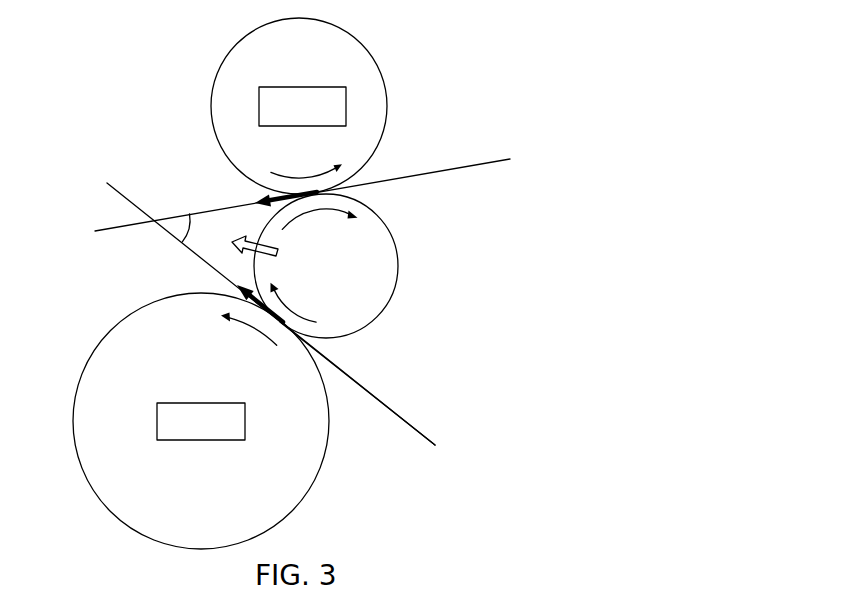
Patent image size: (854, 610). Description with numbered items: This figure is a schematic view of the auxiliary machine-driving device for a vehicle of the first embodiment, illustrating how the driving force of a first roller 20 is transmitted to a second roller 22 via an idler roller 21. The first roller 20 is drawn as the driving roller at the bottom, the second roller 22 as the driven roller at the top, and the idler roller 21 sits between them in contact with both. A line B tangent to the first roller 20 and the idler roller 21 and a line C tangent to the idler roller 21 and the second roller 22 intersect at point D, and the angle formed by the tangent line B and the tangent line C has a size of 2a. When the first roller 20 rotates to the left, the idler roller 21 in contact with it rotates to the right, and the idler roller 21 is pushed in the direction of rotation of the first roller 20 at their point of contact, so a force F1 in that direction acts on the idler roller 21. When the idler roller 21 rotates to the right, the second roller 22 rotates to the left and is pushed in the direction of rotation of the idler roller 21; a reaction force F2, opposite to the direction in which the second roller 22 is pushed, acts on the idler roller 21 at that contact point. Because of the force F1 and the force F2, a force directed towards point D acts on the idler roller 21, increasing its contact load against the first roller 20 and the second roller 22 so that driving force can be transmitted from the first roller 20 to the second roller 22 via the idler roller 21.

The first roller 20 is at (101, 341).
The idler roller 21 is at (385, 270).
The second roller 22 is at (387, 100).
The tangent line C is at (485, 163).
The intersection point D is at (155, 220).
The tangent line B is at (413, 427).
The force F1 is at (240, 290).
The reaction force F2 is at (262, 202).
The angle 2a is at (178, 233).